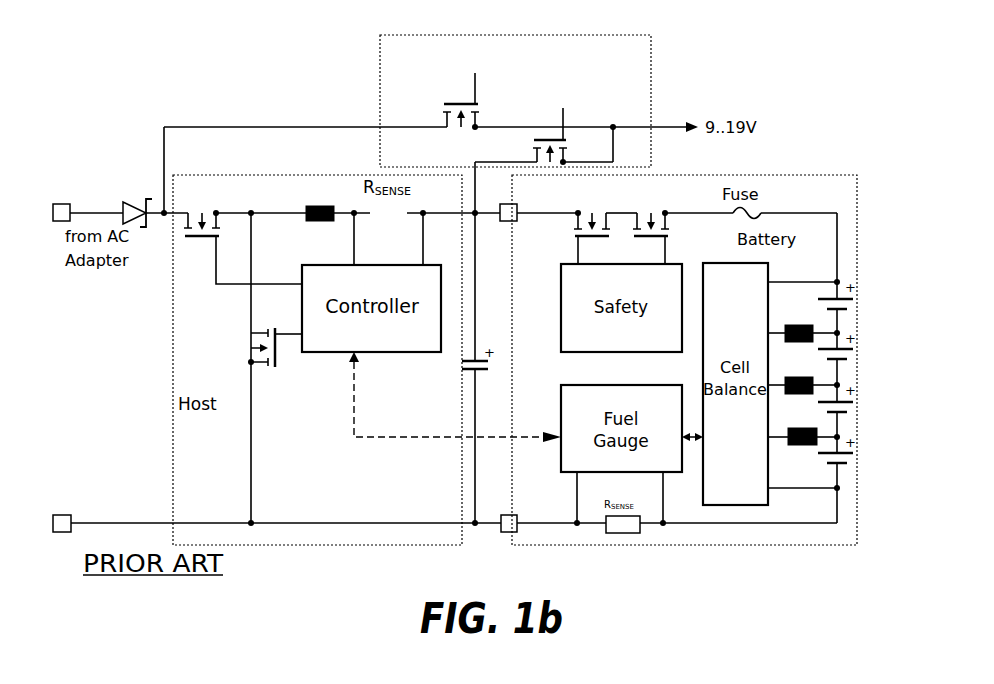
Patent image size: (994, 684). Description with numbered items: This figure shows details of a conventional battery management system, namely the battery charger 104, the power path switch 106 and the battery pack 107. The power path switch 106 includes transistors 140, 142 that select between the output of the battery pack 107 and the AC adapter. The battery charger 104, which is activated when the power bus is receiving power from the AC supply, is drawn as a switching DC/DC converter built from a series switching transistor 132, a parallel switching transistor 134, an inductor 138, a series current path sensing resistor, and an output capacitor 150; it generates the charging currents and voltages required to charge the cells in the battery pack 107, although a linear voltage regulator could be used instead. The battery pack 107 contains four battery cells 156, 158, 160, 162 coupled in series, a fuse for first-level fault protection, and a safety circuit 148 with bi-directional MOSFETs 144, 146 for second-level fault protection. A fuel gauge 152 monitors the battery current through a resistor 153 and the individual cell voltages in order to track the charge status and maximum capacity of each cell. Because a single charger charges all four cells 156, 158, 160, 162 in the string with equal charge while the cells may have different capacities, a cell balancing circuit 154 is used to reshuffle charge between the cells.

The battery charger 104 is at (270, 176).
The power path switch 106 is at (380, 110).
The battery pack 107 is at (838, 176).
The series switching transistor 132 is at (203, 213).
The parallel switching transistor 134 is at (251, 348).
The inductor 138 is at (309, 206).
The transistor 140 is at (460, 102).
The transistor 142 is at (551, 136).
The bi-directional MOSFET 144 is at (592, 212).
The bi-directional MOSFET 146 is at (651, 212).
The safety circuit 148 is at (561, 292).
The output capacitor 150 is at (470, 374).
The fuel gauge 152 is at (561, 419).
The resistor 153 is at (632, 535).
The cell balancing circuit 154 is at (752, 498).
The battery cell 156 is at (848, 299).
The battery cell 158 is at (850, 351).
The battery cell 160 is at (850, 401).
The battery cell 162 is at (846, 453).